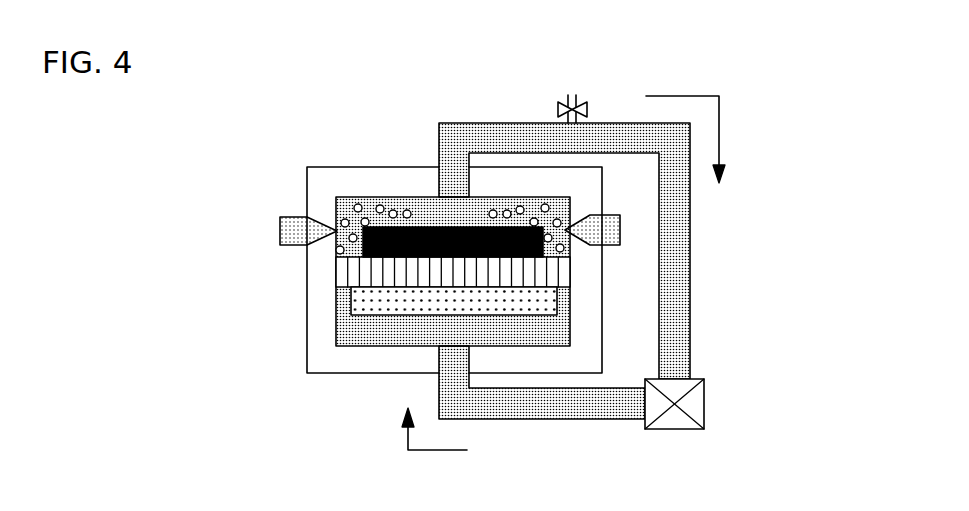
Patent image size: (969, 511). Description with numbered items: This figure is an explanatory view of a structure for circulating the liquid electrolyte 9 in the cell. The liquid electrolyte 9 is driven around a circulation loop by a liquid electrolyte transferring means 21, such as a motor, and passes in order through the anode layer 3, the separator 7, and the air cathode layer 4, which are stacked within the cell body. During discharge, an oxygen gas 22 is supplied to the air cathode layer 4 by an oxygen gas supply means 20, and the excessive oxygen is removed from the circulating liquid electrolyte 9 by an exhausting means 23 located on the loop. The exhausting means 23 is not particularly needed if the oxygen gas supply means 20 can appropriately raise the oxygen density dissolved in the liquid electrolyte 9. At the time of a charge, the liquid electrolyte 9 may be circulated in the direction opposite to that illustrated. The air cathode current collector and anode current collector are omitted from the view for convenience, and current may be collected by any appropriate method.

The anode layer 3 is at (372, 295).
The air cathode layer 4 is at (365, 249).
The separator 7 is at (372, 268).
The liquid electrolyte 9 is at (478, 131).
The oxygen gas supply means 20 is at (280, 232).
The liquid electrolyte transferring means 21 is at (697, 402).
The oxygen gas 22 is at (337, 210).
The exhausting means 23 is at (570, 92).